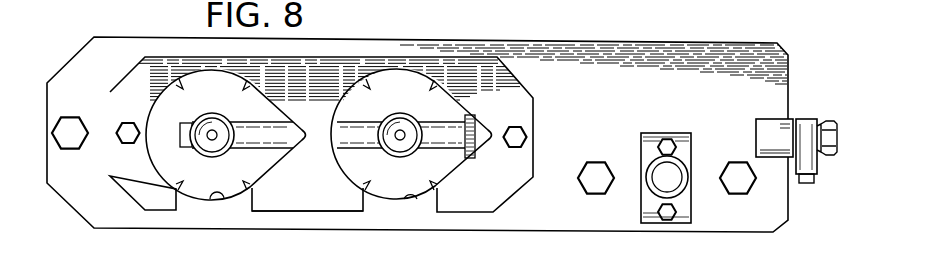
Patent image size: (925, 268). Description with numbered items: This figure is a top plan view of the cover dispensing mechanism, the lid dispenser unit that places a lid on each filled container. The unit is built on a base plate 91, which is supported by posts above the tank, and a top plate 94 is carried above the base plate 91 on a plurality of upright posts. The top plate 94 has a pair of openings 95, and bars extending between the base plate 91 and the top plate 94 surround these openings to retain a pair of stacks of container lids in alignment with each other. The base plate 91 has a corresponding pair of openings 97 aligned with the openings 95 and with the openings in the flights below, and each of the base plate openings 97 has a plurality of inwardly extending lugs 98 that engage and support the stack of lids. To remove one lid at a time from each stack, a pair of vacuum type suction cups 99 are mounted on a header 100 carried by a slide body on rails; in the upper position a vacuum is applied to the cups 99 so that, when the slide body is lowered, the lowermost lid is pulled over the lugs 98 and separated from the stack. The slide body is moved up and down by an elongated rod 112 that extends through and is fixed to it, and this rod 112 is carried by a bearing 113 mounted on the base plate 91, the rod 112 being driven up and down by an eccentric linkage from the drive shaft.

The base plate 91 is at (80, 193).
The top plate 94 is at (335, 201).
The openings 95 is at (268, 108).
The openings 97 is at (222, 198).
The lugs 98 is at (243, 85).
The suction cups 99 is at (203, 115).
The header 100 is at (357, 139).
The elongated rod 112 is at (675, 165).
The bearing 113 is at (642, 203).